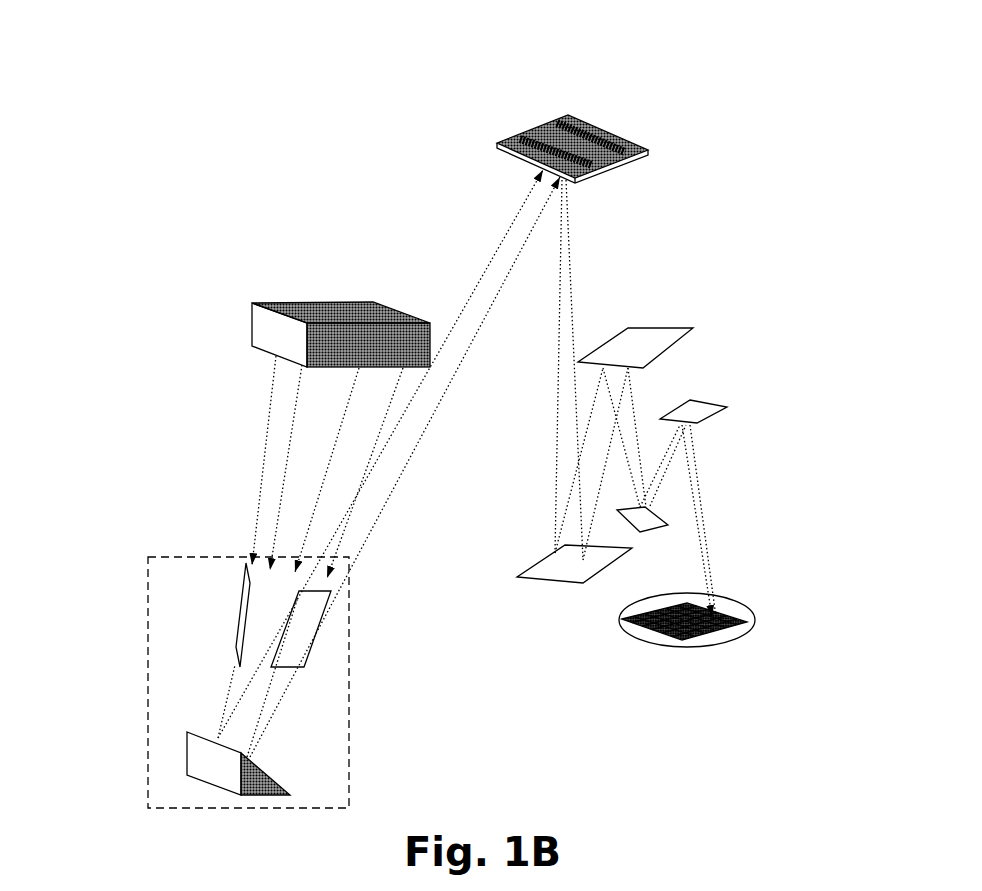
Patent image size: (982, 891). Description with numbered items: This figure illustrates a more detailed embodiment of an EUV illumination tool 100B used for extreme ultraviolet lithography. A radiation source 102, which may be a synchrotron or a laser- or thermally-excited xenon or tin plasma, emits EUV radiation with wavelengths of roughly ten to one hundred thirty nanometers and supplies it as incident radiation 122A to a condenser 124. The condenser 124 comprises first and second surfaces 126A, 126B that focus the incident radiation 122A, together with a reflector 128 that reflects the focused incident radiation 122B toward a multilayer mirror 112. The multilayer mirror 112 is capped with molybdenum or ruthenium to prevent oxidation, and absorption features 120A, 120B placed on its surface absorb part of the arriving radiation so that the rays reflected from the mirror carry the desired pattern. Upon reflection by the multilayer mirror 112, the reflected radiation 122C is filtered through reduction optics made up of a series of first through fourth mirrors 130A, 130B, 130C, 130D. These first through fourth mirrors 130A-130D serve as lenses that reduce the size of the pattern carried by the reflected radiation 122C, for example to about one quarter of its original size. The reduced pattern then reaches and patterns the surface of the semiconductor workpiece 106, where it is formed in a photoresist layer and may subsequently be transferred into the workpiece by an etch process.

The EUV illumination tool 100B is at (101, 76).
The multilayer mirror 112 is at (560, 145).
The absorption feature 120A is at (598, 179).
The absorption feature 120B is at (631, 156).
The radiation source 102 is at (323, 321).
The incident radiation 122A is at (287, 467).
The focused incident radiation 122B is at (389, 463).
The reflected radiation 122C is at (606, 370).
The condenser 124 is at (227, 669).
The first surface 126A is at (206, 615).
The second surface 126B is at (322, 631).
The reflector 128 is at (259, 763).
The first mirror 130A is at (548, 561).
The second mirror 130B is at (655, 343).
The third mirror 130C is at (605, 560).
The fourth mirror 130D is at (720, 404).
The semiconductor workpiece 106 is at (712, 609).